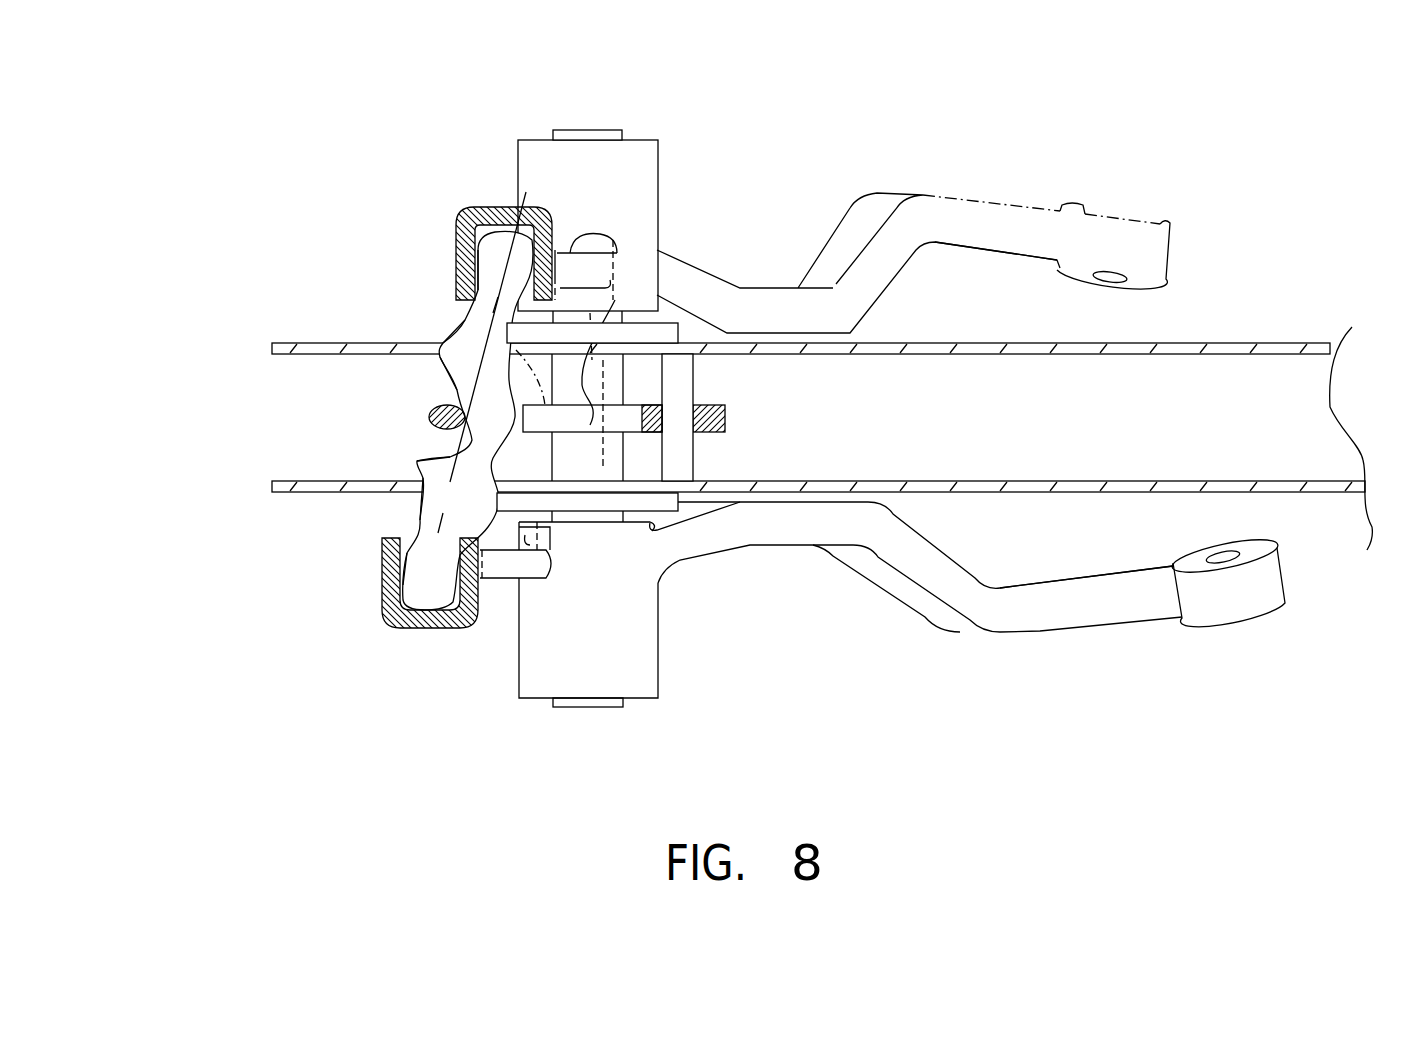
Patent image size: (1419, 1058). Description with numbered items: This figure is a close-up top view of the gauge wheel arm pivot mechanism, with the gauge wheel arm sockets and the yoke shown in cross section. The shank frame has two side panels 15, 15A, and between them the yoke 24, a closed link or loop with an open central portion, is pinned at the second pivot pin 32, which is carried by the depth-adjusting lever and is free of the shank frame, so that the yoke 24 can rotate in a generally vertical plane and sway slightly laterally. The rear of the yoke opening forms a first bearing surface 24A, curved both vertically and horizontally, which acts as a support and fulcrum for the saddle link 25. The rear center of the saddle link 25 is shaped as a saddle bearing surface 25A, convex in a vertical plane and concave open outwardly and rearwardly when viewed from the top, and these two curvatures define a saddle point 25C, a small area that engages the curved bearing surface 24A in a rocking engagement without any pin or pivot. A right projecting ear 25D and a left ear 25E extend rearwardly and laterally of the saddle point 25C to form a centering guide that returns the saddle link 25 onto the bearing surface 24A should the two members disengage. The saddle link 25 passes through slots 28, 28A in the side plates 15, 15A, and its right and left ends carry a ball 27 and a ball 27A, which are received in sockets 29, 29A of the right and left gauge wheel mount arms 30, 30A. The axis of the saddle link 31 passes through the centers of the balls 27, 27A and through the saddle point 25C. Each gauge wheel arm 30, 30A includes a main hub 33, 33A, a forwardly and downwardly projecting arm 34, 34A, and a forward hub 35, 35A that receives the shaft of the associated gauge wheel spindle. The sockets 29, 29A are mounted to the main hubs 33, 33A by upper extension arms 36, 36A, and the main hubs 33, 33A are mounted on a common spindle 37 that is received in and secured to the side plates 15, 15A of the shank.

The right side panel 15 is at (1090, 481).
The left side panel 15A is at (1160, 343).
The yoke 24 is at (429, 417).
The first bearing surface 24A is at (440, 462).
The saddle link 25 is at (435, 470).
The second bearing surface 25A is at (452, 387).
The saddle point 25C is at (523, 440).
The right projecting ear 25D is at (423, 487).
The left ear 25E is at (447, 353).
The ball 27 is at (428, 570).
The ball 27A is at (507, 265).
The slot 28 is at (585, 490).
The slot 28A is at (612, 335).
The socket 29 is at (387, 622).
The socket 29A is at (474, 207).
The right gauge wheel mount arm 30 is at (1010, 623).
The left gauge wheel mount arm 30A is at (947, 212).
The axis of the saddle link 31 is at (526, 192).
The second pivot pin 32 is at (692, 377).
The main hub 33 is at (638, 660).
The main hub 33A is at (637, 167).
The arm 34 is at (1100, 612).
The arm 34A is at (1016, 208).
The forward hub 35 is at (1277, 597).
The forward hub 35A is at (1168, 221).
The upper extension arm 36 is at (500, 578).
The upper extension arm 36A is at (578, 257).
The common spindle 37 is at (568, 713).